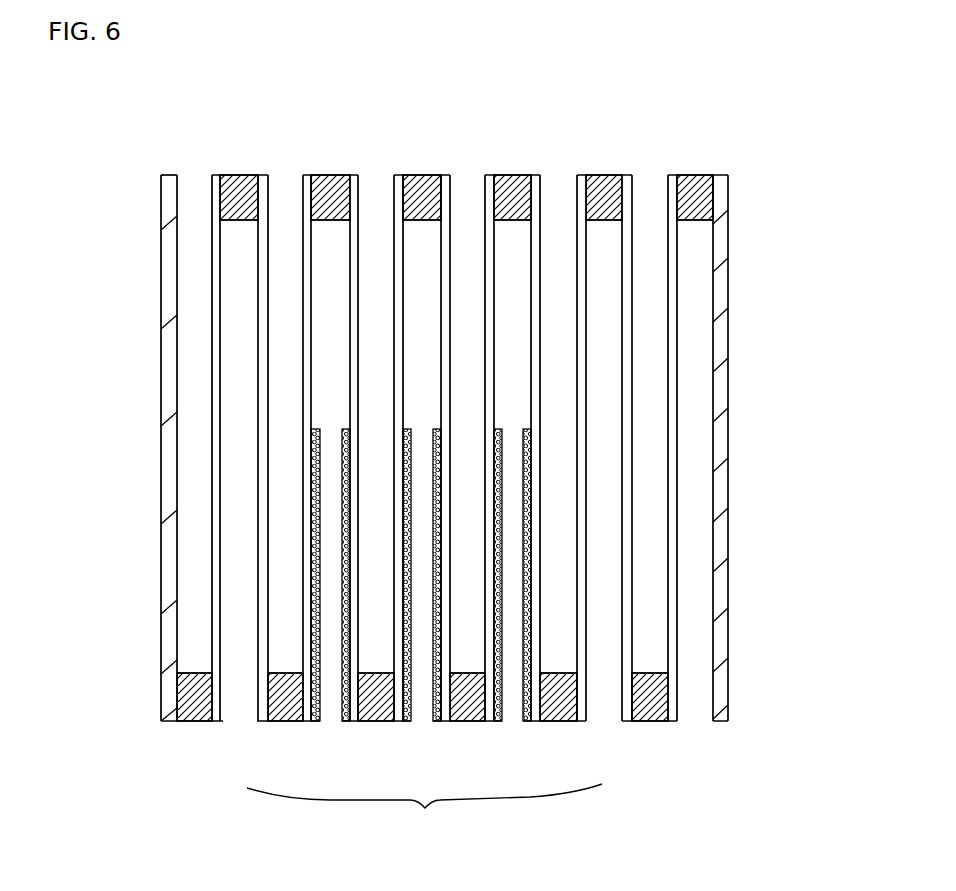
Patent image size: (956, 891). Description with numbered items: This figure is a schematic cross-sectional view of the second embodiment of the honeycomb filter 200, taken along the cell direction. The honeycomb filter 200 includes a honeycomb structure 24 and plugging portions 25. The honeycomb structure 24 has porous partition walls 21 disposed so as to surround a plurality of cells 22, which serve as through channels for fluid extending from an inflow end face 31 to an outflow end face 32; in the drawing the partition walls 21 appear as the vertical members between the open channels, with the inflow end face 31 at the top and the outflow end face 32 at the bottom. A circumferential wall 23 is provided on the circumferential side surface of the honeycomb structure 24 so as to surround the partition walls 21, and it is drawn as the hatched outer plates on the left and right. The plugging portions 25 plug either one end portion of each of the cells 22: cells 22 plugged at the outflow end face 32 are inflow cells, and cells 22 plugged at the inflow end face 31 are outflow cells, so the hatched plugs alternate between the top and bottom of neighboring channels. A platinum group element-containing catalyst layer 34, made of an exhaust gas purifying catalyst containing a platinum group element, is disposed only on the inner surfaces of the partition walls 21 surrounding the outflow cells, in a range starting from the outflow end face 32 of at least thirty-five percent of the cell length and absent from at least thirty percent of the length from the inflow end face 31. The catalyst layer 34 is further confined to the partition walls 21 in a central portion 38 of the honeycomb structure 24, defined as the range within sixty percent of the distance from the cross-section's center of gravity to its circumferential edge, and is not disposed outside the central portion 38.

The honeycomb filter 200 is at (813, 82).
The partition wall 21 is at (628, 252).
The cell 22 is at (555, 232).
The circumferential wall 23 is at (170, 350).
The honeycomb structure 24 is at (741, 163).
The plugging portion 25 is at (428, 192).
The inflow end face 31 is at (203, 157).
The outflow end face 32 is at (226, 737).
The platinum group element-containing catalyst layer 34 is at (502, 472).
The central portion 38 is at (424, 813).